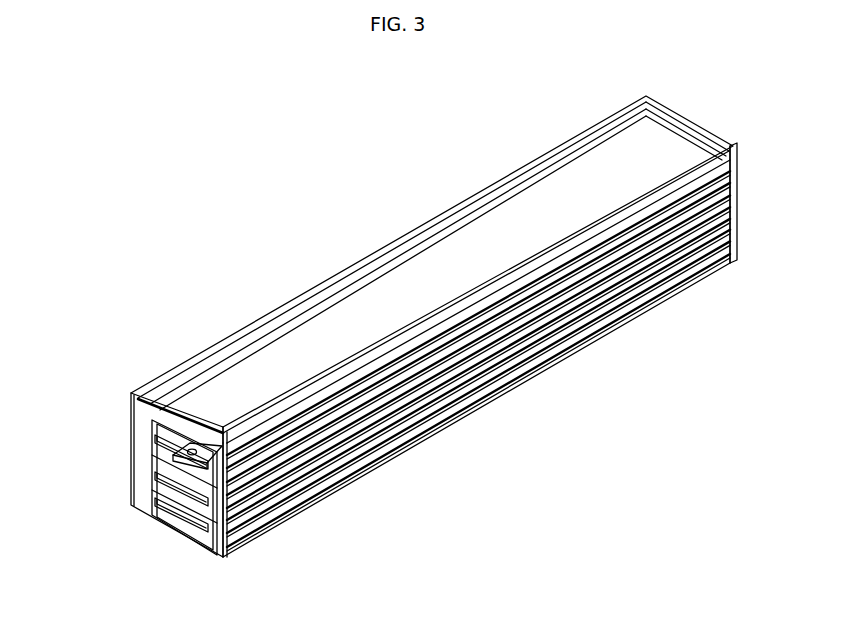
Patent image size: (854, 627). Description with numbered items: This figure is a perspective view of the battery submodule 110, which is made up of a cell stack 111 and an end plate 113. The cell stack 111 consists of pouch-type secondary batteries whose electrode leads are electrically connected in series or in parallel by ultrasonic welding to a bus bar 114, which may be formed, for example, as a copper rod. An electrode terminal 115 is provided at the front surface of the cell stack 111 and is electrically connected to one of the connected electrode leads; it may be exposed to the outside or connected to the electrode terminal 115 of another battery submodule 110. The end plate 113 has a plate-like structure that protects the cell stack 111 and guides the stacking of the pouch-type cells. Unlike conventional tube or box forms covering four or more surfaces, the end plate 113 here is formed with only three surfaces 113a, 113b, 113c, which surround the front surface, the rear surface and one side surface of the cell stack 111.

The battery submodule 110 is at (279, 137).
The cell stack 111 is at (481, 436).
The end plate 113 is at (236, 332).
The first surface of the end plate 113a is at (135, 458).
The second surface of the end plate 113b is at (375, 252).
The third surface of the end plate 113c is at (683, 116).
The bus bar 114 is at (172, 515).
The electrode terminal 115 is at (192, 449).